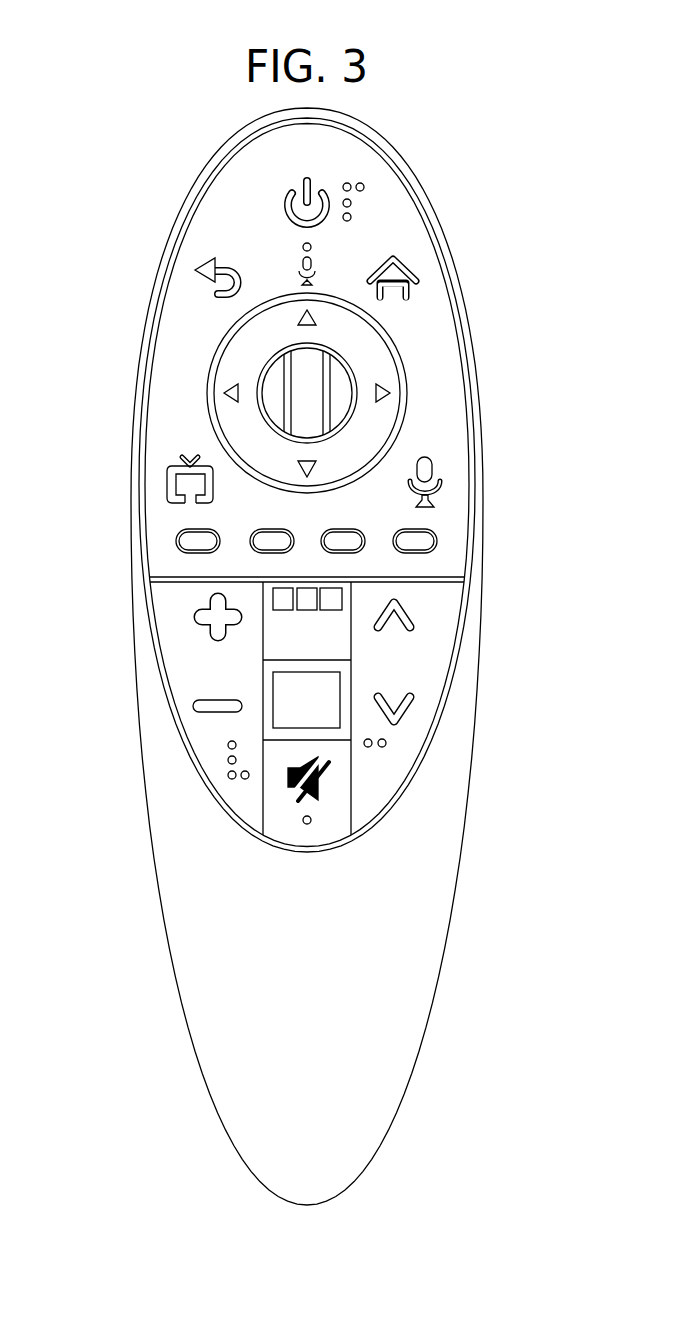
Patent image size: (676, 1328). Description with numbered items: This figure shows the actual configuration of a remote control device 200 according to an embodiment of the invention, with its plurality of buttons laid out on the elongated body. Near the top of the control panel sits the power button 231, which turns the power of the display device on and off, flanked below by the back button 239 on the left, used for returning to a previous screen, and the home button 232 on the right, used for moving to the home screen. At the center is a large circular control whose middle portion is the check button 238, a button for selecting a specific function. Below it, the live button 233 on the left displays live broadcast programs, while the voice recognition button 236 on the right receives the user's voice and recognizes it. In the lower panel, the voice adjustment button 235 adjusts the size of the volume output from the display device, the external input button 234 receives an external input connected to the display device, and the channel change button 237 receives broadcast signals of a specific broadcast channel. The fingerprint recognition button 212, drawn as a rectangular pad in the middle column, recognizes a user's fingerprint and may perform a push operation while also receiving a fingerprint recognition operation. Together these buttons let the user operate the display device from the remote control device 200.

The remote control device 200 is at (75, 150).
The fingerprint recognition button 212 is at (322, 728).
The power button 231 is at (322, 190).
The home button 232 is at (407, 263).
The live button 233 is at (167, 488).
The external input button 234 is at (313, 590).
The voice adjustment button 235 is at (168, 678).
The voice recognition button 236 is at (437, 473).
The channel change button 237 is at (432, 652).
The check button 238 is at (270, 377).
The back button 239 is at (200, 283).